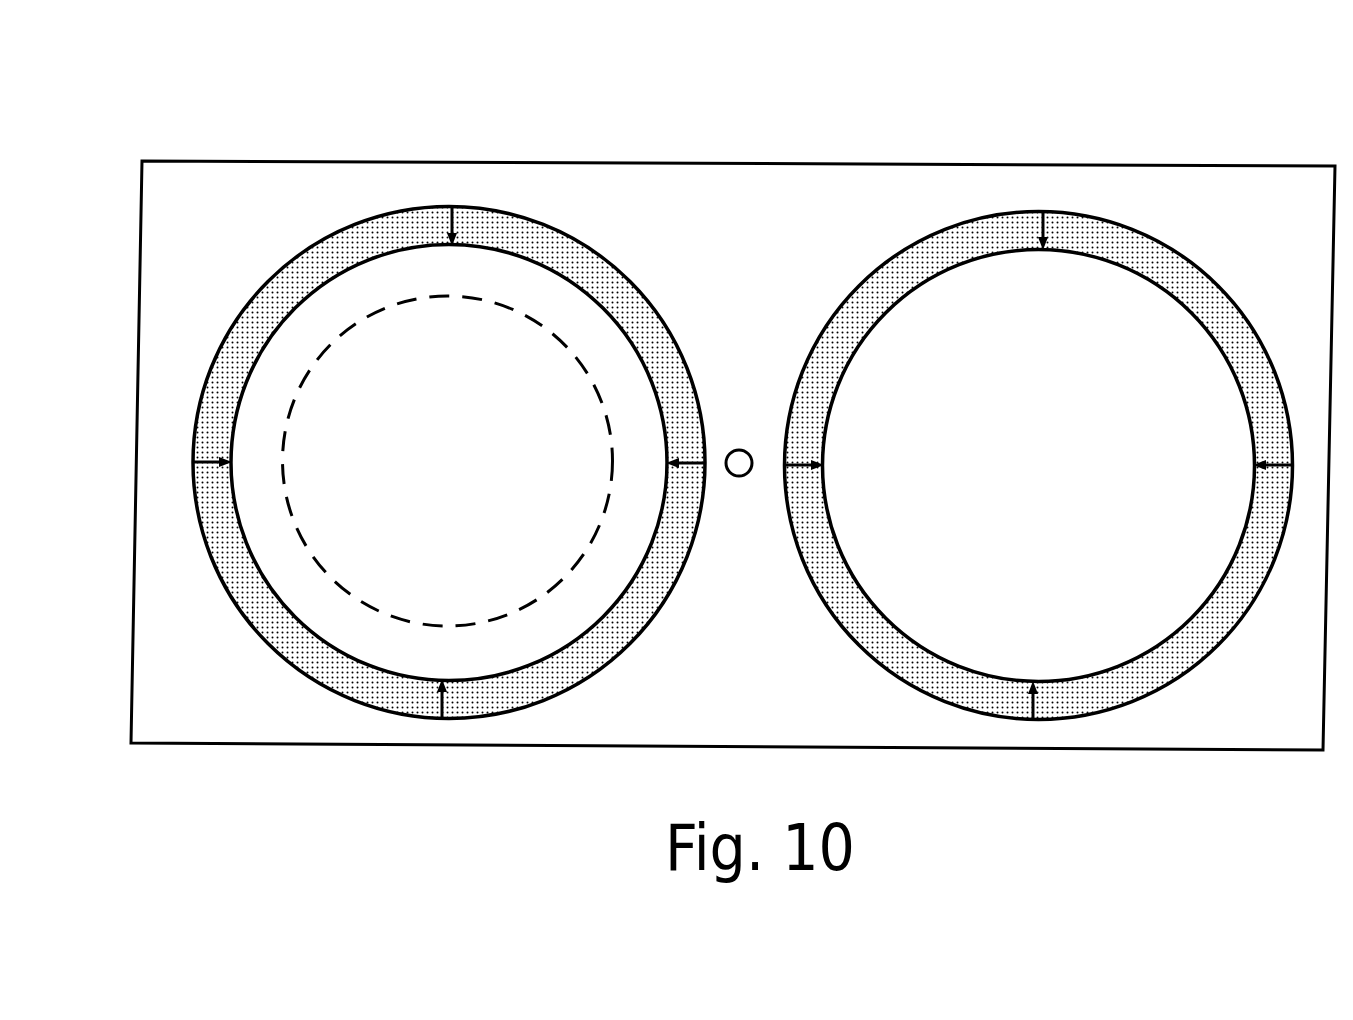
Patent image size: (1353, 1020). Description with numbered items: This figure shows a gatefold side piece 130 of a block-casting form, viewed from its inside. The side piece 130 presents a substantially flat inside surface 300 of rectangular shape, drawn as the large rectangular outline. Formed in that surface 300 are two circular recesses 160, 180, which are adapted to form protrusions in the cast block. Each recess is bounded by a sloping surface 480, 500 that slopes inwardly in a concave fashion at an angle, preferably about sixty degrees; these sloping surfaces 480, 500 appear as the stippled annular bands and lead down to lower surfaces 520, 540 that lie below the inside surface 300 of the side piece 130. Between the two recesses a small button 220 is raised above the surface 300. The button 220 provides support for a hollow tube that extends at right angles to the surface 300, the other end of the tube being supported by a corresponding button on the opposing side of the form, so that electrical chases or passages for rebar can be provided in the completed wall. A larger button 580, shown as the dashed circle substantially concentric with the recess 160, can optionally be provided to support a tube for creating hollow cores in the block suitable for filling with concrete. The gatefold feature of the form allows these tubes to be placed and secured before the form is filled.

The side piece 130 is at (843, 133).
The inside surface 300 is at (670, 183).
The surface 480 is at (617, 297).
The circular recess 160 is at (654, 636).
The lower surface 520 is at (482, 670).
The larger button 580 is at (540, 557).
The circular recess 180 is at (1208, 251).
The surface 500 is at (903, 296).
The lower surface 540 is at (1077, 583).
The button 220 is at (737, 476).